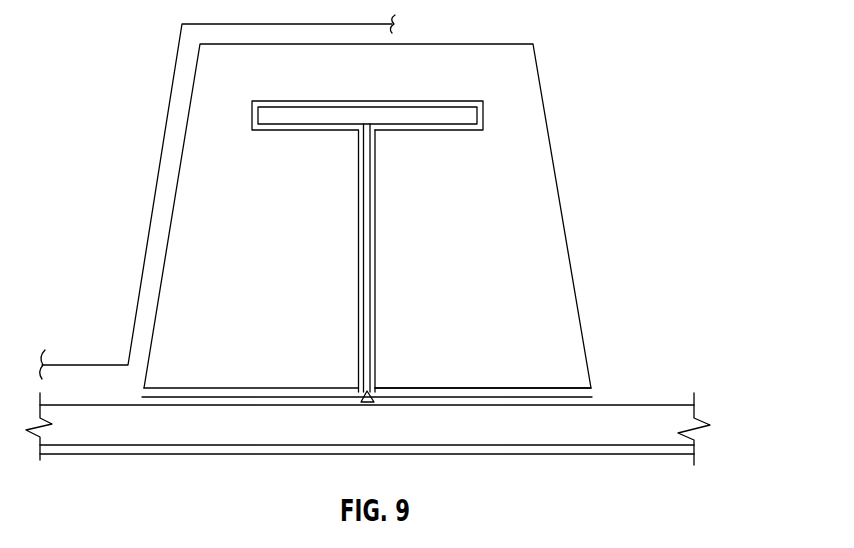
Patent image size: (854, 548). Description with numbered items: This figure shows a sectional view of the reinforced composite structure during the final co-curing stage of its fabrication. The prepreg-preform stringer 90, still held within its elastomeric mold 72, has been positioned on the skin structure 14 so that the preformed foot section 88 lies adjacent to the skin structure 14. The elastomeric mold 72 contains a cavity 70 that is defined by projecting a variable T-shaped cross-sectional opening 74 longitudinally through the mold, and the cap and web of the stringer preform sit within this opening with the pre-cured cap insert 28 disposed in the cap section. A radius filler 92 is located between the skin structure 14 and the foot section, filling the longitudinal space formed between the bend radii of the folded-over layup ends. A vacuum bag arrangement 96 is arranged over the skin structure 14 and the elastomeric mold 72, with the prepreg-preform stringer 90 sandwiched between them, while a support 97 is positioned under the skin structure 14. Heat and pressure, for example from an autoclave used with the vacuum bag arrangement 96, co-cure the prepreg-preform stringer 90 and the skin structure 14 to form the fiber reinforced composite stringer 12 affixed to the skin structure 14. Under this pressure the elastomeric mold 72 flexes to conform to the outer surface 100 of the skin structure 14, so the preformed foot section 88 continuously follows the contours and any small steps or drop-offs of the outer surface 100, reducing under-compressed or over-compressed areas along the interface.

The fiber reinforced composite stringer 12 is at (250, 397).
The skin structure 14 is at (682, 415).
The pre-cured cap insert 28 is at (466, 115).
The cavity 70 is at (358, 182).
The elastomeric mold 72 is at (435, 62).
The variable T-shaped cross-sectional opening 74 is at (386, 230).
The preformed foot section 88 is at (541, 397).
The prepreg-preform stringer 90 is at (460, 90).
The radius filler 92 is at (376, 384).
The vacuum bag arrangement 96 is at (140, 282).
The support 97 is at (471, 436).
The outer surface 100 is at (678, 405).